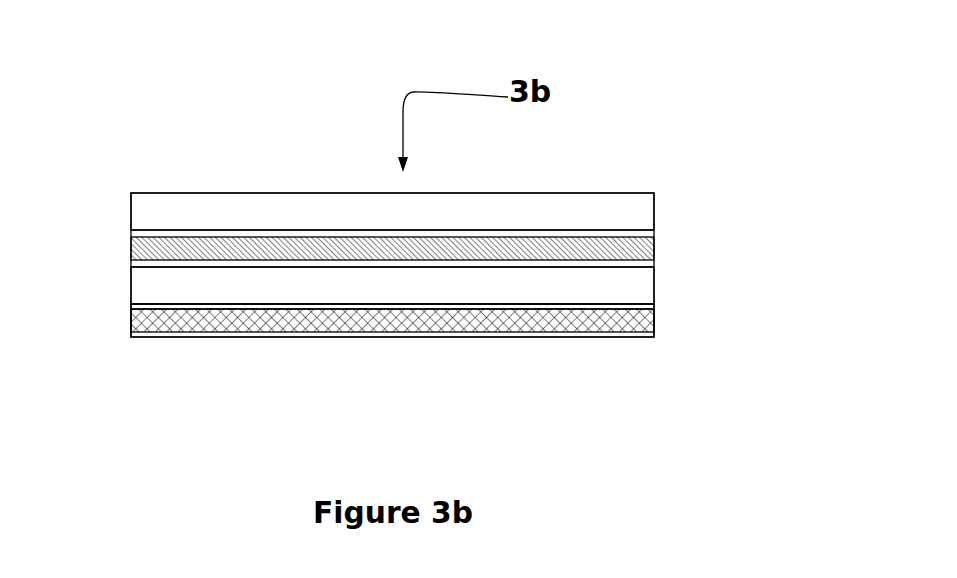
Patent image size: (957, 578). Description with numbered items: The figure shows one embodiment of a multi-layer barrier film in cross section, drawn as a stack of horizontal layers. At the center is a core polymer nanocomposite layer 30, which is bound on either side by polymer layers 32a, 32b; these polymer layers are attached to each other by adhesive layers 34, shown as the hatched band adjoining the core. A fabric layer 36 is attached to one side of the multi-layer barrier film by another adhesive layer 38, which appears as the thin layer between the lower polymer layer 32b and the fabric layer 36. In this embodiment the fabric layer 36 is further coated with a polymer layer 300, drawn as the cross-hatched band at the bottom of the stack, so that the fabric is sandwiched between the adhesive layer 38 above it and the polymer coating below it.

The core polymer nanocomposite layer 30 is at (656, 247).
The polymer layer 32a is at (654, 207).
The polymer layer 32b is at (654, 286).
The adhesive layers 34 is at (131, 238).
The fabric layer 36 is at (660, 322).
The adhesive layer 38 is at (131, 304).
The polymer layer 300 is at (131, 332).